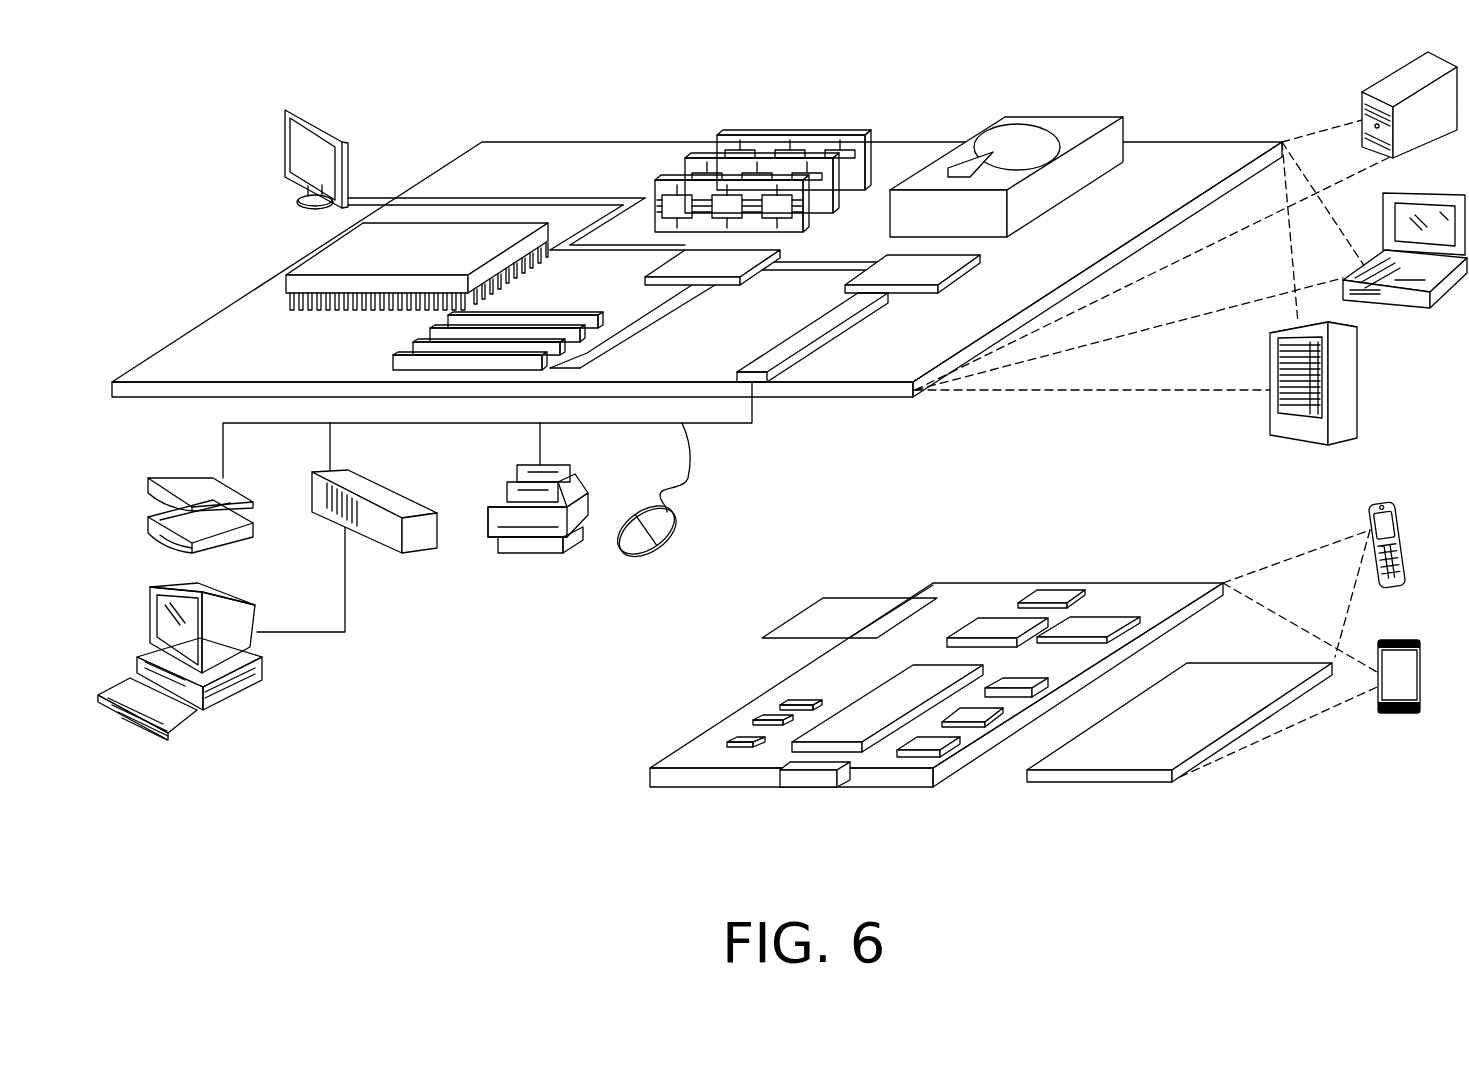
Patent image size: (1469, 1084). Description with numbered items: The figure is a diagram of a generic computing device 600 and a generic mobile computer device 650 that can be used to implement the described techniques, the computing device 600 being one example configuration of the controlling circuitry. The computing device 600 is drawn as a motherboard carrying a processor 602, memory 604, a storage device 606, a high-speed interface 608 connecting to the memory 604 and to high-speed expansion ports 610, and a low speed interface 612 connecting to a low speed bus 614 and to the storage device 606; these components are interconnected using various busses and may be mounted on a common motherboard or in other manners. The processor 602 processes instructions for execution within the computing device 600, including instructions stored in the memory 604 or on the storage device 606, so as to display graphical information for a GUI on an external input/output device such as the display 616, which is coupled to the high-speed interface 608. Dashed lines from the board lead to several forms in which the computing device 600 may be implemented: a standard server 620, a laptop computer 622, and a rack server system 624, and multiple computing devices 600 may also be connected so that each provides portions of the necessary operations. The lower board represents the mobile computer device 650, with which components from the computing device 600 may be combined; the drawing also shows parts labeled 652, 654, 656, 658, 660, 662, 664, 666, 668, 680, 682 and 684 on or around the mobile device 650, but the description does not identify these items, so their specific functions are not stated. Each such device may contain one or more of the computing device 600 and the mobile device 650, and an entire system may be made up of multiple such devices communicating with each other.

The computing device 600 is at (425, 82).
The processor 602 is at (310, 252).
The memory 604 is at (800, 135).
The storage device 606 is at (1053, 116).
The high-speed interface 608 is at (725, 260).
The high-speed expansion ports 610 is at (420, 334).
The low speed interface 612 is at (882, 265).
The low speed bus 614 is at (760, 368).
The display 616 is at (290, 110).
The standard server 620 is at (1385, 82).
The laptop computer 622 is at (1443, 193).
The rack server system 624 is at (1360, 383).
The mobile computer device 650 is at (1270, 782).
The processor chip 652 is at (853, 717).
The display panel 654 is at (1223, 680).
The memory chip 656 is at (938, 742).
The sensor chip 658 is at (985, 715).
The controller chip 660 is at (1022, 680).
The antenna trace 662 is at (917, 598).
The small components 664 is at (755, 722).
The communication chip 666 is at (997, 620).
The storage chip 668 is at (1098, 623).
The wireless module / mobile phone 680 is at (1055, 597).
The tablet device 682 is at (1388, 640).
The battery plane 684 is at (823, 598).